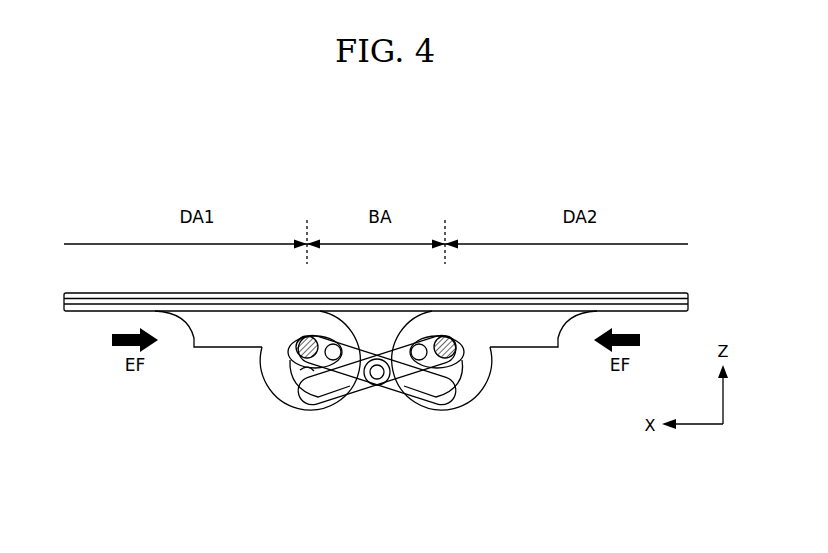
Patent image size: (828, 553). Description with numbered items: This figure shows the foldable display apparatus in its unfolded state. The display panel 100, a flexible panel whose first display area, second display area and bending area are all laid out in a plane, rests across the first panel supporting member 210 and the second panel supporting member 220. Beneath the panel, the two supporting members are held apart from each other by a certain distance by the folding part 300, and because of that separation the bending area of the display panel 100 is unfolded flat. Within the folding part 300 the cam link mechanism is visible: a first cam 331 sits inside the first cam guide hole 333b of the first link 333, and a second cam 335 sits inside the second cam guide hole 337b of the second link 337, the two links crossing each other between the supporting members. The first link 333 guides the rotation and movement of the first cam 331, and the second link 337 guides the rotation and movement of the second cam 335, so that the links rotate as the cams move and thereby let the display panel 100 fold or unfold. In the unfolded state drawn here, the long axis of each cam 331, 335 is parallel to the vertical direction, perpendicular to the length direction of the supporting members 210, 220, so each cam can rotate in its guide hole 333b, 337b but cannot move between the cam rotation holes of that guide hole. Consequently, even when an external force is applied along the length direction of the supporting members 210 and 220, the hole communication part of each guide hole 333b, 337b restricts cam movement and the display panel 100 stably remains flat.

The display panel 100 is at (668, 292).
The first panel supporting member 210 is at (208, 346).
The second panel supporting member 220 is at (540, 340).
The folding part 300 is at (364, 413).
The first cam 331 is at (284, 392).
The first link 333 is at (348, 392).
The first cam guide hole 333b is at (314, 372).
The second cam 335 is at (462, 395).
The second link 337 is at (380, 388).
The second cam guide hole 337b is at (409, 417).